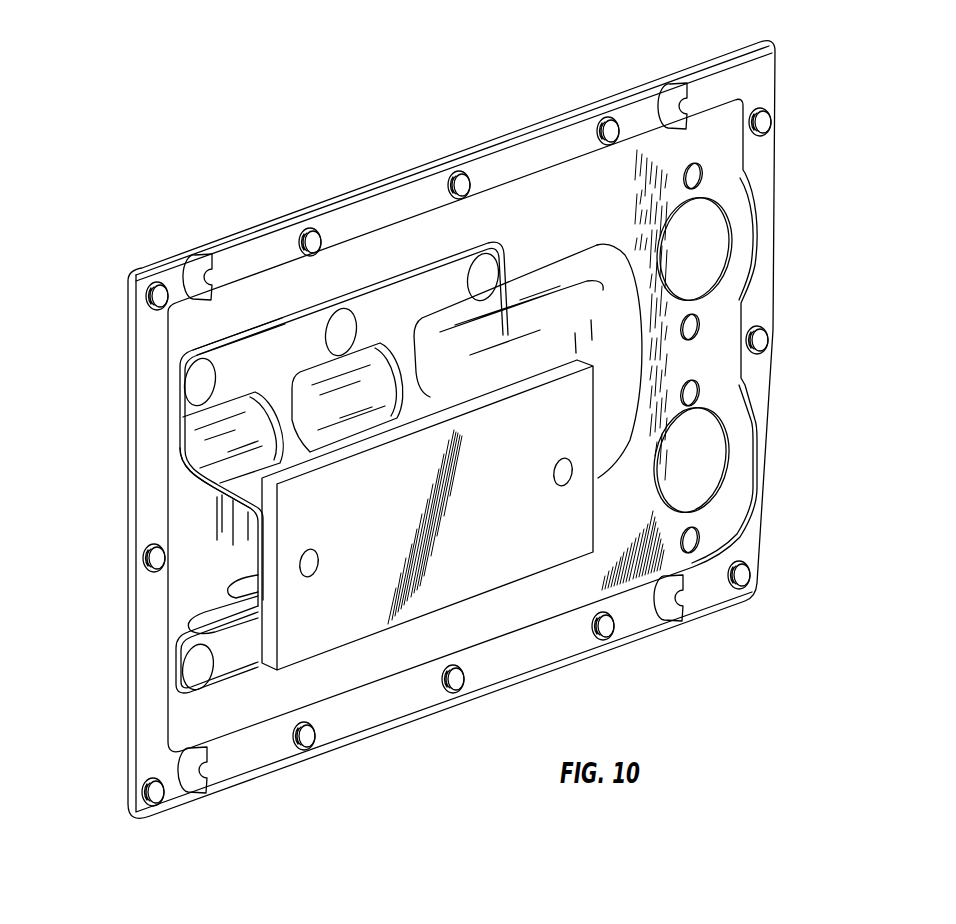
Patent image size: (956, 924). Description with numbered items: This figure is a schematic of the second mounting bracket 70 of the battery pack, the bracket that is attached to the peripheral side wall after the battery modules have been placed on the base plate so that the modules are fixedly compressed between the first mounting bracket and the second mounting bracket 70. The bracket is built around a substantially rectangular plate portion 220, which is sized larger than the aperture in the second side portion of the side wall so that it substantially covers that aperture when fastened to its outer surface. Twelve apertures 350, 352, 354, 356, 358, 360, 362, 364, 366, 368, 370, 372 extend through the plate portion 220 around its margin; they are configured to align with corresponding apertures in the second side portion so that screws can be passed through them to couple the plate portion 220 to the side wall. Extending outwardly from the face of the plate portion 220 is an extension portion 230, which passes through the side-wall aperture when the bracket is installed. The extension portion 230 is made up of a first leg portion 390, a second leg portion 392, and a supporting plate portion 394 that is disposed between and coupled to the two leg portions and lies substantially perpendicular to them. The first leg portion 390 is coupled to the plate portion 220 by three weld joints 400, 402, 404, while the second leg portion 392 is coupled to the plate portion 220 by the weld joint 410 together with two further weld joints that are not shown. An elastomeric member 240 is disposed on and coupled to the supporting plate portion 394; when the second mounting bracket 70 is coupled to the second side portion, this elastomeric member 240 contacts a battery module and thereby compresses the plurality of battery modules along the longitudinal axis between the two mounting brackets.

The second mounting bracket 70 is at (760, 72).
The plate portion 220 is at (360, 212).
The extension portion 230 is at (235, 502).
The elastomeric member 240 is at (358, 618).
The aperture 350 is at (166, 283).
The aperture 352 is at (313, 230).
The aperture 354 is at (466, 173).
The aperture 356 is at (614, 118).
The aperture 358 is at (770, 127).
The aperture 360 is at (768, 338).
The aperture 362 is at (752, 574).
The aperture 364 is at (605, 641).
The aperture 366 is at (456, 694).
The aperture 368 is at (306, 751).
The aperture 370 is at (157, 807).
The aperture 372 is at (147, 568).
The first leg portion 390 is at (237, 501).
The second leg portion 392 is at (232, 604).
The supporting plate portion 394 is at (248, 585).
The weld joint 400 is at (205, 378).
The weld joint 402 is at (345, 328).
The weld joint 404 is at (490, 270).
The weld joint 410 is at (192, 679).